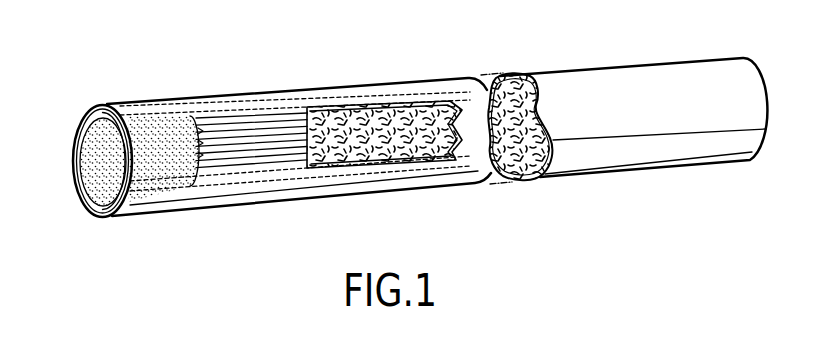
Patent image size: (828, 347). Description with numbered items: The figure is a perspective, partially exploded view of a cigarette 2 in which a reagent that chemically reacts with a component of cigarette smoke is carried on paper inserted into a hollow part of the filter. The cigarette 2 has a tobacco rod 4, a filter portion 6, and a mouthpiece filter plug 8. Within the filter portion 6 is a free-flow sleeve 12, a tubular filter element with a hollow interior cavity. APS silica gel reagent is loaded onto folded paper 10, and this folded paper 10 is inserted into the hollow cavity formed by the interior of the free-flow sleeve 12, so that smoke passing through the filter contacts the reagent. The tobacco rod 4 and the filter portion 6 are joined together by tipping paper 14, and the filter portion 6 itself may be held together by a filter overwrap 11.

The cigarette 2 is at (225, 60).
The tobacco rod 4 is at (611, 71).
The filter portion 6 is at (158, 88).
The mouthpiece filter plug 8 is at (88, 131).
The folded paper 10 is at (224, 153).
The filter overwrap 11 is at (93, 214).
The free-flow sleeve 12 is at (284, 163).
The tipping paper 14 is at (287, 97).